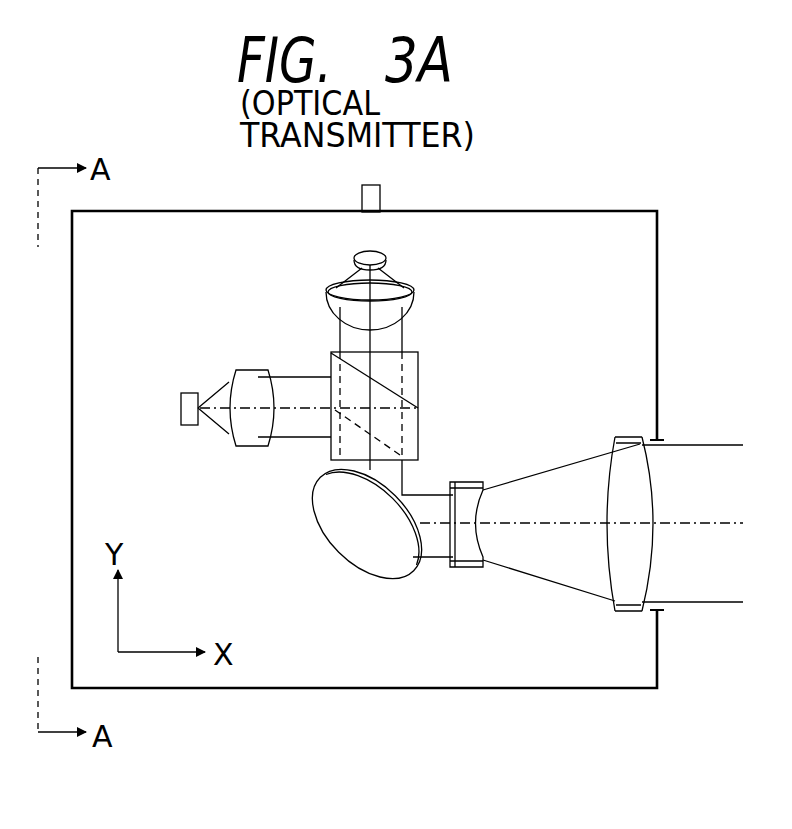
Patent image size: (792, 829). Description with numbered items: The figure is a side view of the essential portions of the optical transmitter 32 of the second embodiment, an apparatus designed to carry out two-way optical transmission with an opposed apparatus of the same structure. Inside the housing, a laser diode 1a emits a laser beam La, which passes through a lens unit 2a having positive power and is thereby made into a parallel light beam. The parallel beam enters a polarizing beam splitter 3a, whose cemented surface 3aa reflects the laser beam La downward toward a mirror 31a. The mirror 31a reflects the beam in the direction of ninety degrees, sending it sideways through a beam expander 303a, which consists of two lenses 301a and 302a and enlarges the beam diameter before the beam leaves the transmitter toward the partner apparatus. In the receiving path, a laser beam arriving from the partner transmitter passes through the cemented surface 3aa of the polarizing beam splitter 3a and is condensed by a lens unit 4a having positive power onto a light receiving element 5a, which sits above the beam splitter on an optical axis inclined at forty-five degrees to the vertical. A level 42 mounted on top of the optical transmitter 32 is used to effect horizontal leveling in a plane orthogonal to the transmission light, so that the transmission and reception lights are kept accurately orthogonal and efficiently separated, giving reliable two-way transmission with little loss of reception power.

The optical transmitter 32 is at (222, 211).
The level 42 is at (382, 200).
The laser diode 1a is at (190, 393).
The lens unit having positive power 2a is at (258, 370).
The laser beam La is at (293, 437).
The polarizing beam splitter 3a is at (419, 352).
The cemented surface 3aa is at (355, 353).
The lens unit having positive power 4a is at (412, 296).
The light receiving element 5a is at (388, 263).
The mirror 31a is at (402, 578).
The lens 301a is at (470, 481).
The lens 302a is at (628, 435).
The beam expander 303a is at (581, 457).